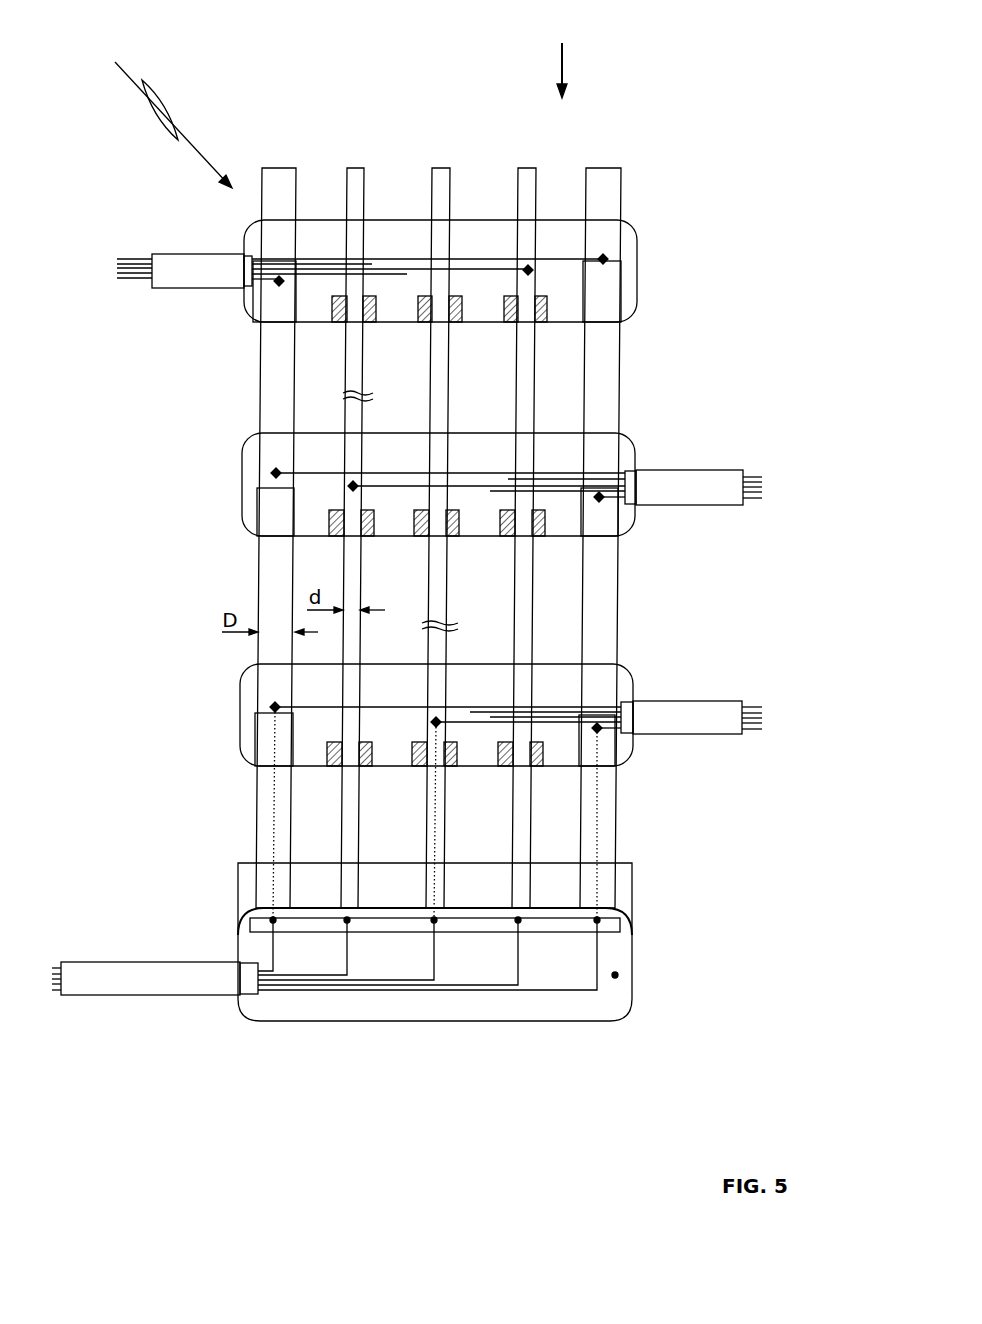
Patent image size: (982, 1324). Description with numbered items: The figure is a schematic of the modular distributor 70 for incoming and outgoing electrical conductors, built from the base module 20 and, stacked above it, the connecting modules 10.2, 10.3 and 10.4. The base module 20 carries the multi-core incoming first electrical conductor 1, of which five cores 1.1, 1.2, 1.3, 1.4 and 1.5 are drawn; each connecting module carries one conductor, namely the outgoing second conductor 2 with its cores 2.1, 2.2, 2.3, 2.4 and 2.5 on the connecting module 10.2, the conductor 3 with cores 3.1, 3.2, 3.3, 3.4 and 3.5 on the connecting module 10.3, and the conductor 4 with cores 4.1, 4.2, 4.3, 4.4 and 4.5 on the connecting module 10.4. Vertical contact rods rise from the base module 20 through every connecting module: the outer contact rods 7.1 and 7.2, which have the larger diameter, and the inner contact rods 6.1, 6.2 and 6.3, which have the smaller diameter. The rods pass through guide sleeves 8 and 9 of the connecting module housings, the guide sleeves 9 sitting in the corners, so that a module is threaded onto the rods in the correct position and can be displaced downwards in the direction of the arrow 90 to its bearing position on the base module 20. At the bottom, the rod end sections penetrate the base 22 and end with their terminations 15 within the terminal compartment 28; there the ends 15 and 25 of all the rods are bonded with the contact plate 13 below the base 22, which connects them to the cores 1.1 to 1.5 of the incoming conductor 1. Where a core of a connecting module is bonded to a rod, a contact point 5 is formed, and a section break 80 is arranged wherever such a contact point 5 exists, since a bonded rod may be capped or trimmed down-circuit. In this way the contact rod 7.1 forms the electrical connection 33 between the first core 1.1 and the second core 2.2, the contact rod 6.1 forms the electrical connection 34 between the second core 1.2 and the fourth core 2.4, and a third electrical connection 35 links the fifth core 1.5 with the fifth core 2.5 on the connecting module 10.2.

The first electrical conductor 1 is at (148, 985).
The first core of the first conductor 1.1 is at (264, 972).
The second core of the first conductor 1.2 is at (311, 976).
The third core of the first conductor 1.3 is at (348, 982).
The fourth core of the first conductor 1.4 is at (387, 987).
The fifth core of the first conductor 1.5 is at (427, 990).
The second electrical conductor 2 is at (695, 699).
The first core of the second conductor 2.1 is at (766, 707).
The second core of the second conductor 2.2 is at (767, 713).
The third core of the second conductor 2.3 is at (762, 718).
The fourth core of the second conductor 2.4 is at (767, 724).
The fifth core of the second conductor 2.5 is at (766, 730).
The conductor 3 is at (695, 468).
The core of conductor 3 3.1 is at (766, 477).
The core of conductor 3 3.2 is at (767, 482).
The core of conductor 3 3.3 is at (762, 488).
The core of conductor 3 3.4 is at (767, 493).
The core of conductor 3 3.5 is at (766, 499).
The conductor 4 is at (179, 253).
The core of conductor 4 4.1 is at (129, 258).
The core of conductor 4 4.2 is at (123, 262).
The core of conductor 4 4.3 is at (118, 268).
The core of conductor 4 4.4 is at (122, 276).
The core of conductor 4 4.5 is at (129, 281).
The contact point 5 is at (277, 283).
The inner contact rod 6.1 is at (355, 173).
The inner contact rod 6.2 is at (442, 173).
The inner contact rod 6.3 is at (527, 173).
The outer contact rod 7.1 is at (270, 173).
The outer contact rod 7.2 is at (605, 173).
The guide sleeve 8 is at (372, 323).
The guide sleeve 9 is at (297, 300).
The connecting module 10.2 is at (239, 704).
The connecting module 10.3 is at (241, 470).
The connecting module 10.4 is at (637, 240).
The contact plate 13 is at (610, 927).
The termination 15 is at (353, 912).
The base module 20 is at (620, 1021).
The base 22 is at (321, 905).
The end of contact rod 25 is at (261, 913).
The terminal compartment 28 is at (620, 975).
The electrical connection 33 is at (271, 857).
The electrical connection 34 is at (432, 830).
The third electrical connection 35 is at (600, 828).
The distributor 70 is at (159, 109).
The section break 80 is at (373, 397).
The arrow 90 is at (560, 58).